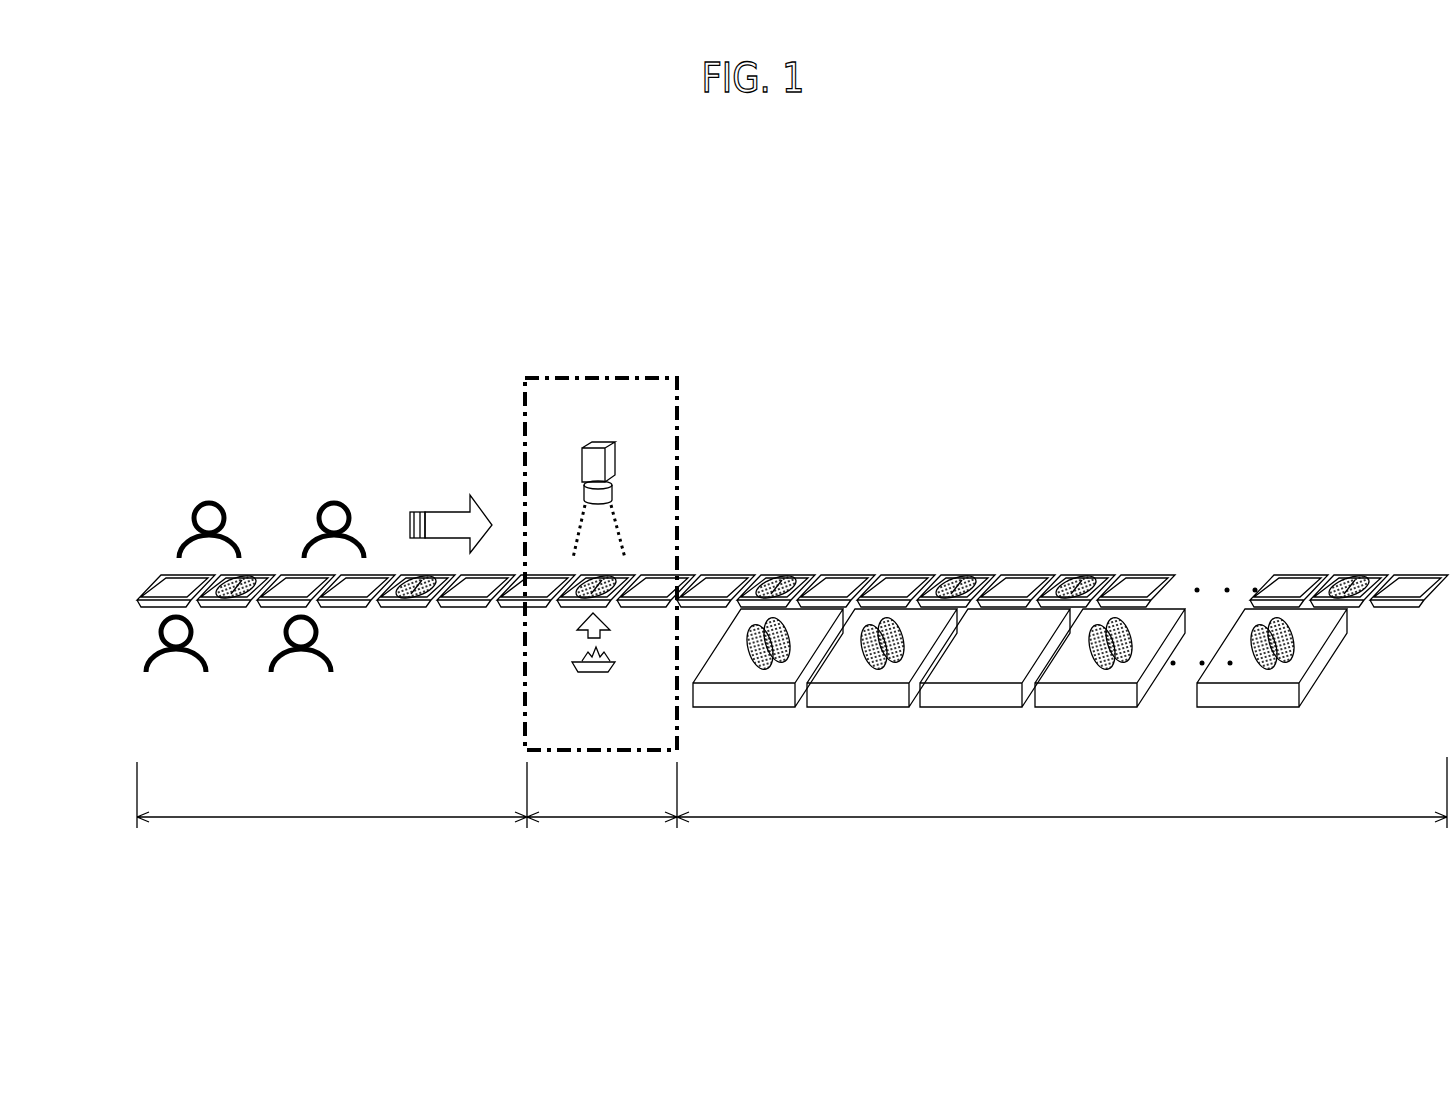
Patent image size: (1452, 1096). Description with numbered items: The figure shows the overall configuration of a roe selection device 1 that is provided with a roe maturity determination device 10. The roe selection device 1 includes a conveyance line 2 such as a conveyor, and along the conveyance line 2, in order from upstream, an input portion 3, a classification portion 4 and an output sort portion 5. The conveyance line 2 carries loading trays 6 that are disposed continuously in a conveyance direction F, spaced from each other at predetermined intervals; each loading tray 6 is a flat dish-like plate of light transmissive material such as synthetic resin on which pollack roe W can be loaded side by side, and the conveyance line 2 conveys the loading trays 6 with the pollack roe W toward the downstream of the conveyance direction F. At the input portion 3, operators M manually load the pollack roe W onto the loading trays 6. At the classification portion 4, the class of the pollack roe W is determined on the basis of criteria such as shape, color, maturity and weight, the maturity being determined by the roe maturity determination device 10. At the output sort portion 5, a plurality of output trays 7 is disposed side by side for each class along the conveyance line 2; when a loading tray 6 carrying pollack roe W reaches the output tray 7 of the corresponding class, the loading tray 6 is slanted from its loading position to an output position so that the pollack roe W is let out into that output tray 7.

The roe selection device 1 is at (757, 316).
The conveyance line 2 is at (860, 559).
The input portion 3 is at (332, 795).
The classification portion 4 is at (601, 603).
The output sort portion 5 is at (1062, 792).
The loading tray 6 is at (178, 590).
The output tray 7 is at (715, 702).
The roe maturity determination device 10 is at (649, 458).
The pollack roe W is at (240, 610).
The operator M is at (209, 500).
The conveyance direction F is at (442, 510).